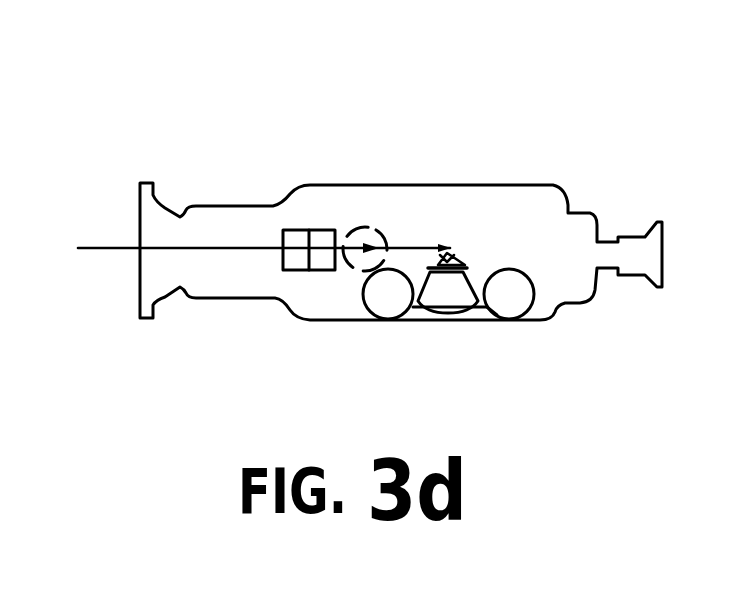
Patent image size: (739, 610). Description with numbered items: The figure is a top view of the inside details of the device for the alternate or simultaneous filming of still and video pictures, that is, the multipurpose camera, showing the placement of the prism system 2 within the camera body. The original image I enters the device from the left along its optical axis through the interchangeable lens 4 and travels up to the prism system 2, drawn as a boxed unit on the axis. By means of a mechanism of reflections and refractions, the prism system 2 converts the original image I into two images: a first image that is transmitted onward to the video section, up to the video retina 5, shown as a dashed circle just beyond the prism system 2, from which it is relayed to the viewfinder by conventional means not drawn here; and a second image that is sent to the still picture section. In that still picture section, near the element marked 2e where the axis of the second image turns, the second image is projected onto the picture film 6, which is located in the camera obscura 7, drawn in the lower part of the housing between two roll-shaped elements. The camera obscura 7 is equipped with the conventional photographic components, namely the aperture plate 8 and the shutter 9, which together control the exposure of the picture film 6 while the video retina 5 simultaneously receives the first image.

The interchangeable lens 4 is at (227, 206).
The prism system 2 is at (300, 230).
The video retina 5 is at (368, 228).
The beam deflector 2e is at (448, 262).
The picture film 6 is at (368, 313).
The camera obscura 7 is at (447, 313).
The aperture plate 8 is at (497, 287).
The shutter 9 is at (497, 315).
The original image I is at (53, 269).